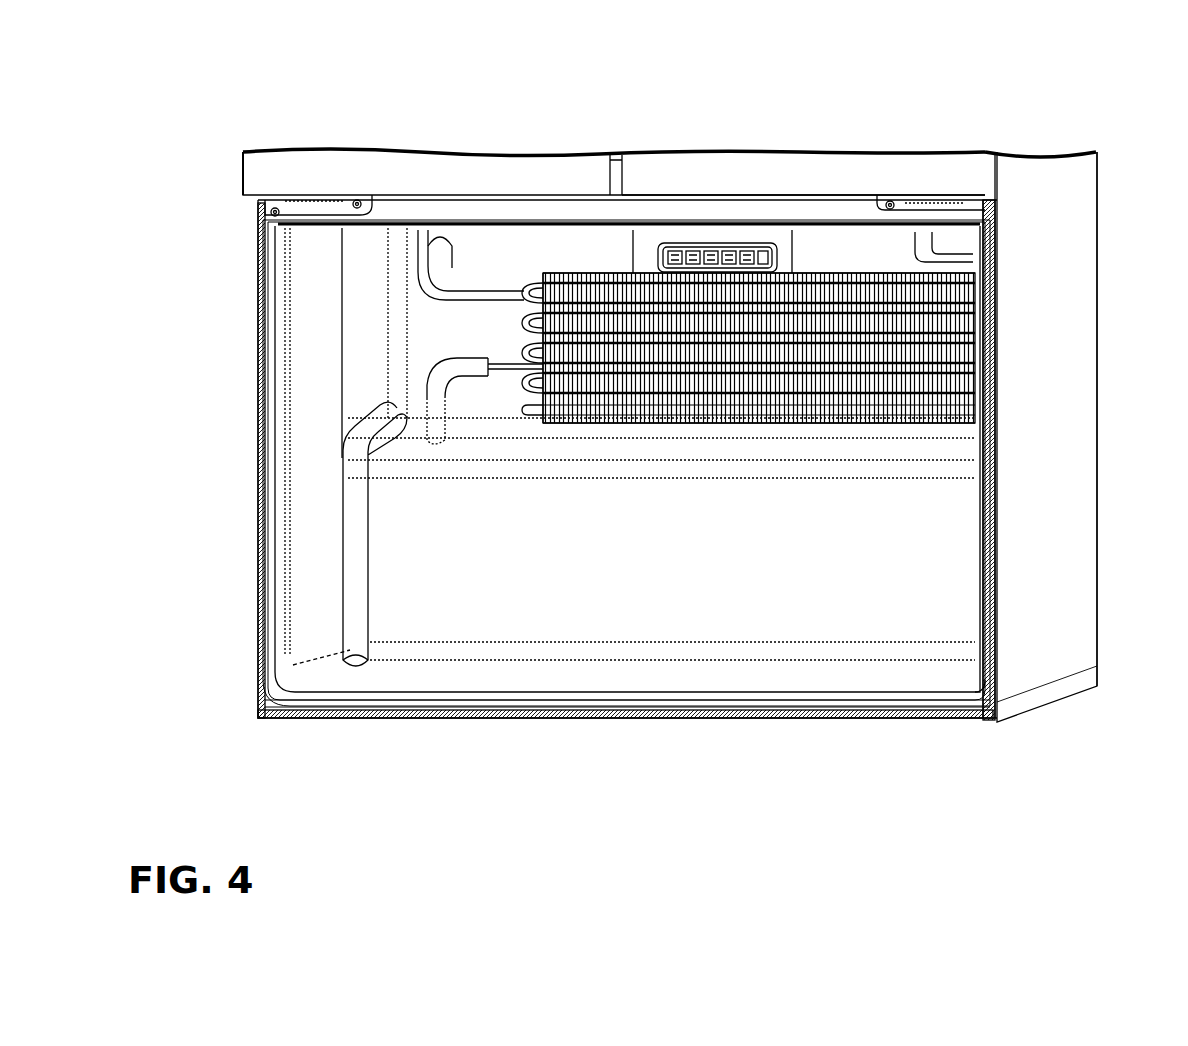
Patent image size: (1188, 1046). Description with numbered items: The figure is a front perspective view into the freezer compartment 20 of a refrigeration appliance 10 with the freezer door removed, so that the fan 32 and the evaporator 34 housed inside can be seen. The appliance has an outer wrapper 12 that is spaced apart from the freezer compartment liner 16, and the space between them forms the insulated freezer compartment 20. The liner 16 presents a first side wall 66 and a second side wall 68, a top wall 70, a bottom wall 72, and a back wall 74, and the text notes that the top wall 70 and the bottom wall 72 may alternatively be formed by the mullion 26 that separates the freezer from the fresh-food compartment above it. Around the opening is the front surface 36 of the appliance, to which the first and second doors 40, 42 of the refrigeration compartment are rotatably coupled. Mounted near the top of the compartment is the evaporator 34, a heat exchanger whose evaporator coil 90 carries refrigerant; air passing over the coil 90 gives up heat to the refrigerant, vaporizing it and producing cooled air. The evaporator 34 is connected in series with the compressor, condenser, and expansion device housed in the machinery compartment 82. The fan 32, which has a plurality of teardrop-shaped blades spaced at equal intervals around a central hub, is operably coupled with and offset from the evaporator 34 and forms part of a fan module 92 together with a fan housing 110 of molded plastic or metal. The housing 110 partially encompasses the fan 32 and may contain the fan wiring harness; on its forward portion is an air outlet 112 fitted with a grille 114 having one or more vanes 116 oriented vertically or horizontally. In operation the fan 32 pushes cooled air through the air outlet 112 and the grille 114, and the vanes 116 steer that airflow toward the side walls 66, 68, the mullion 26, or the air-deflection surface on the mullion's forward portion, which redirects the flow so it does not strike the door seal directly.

The refrigeration appliance 10 is at (238, 162).
The wrapper 12 is at (1050, 287).
The freezer compartment liner 16 is at (325, 497).
The freezer compartment 20 is at (790, 533).
The mullion 26 is at (425, 212).
The fan 32 is at (733, 258).
The evaporator 34 is at (978, 358).
The front surface 36 is at (278, 302).
The first door 40 is at (352, 172).
The second door 42 is at (900, 174).
The first side wall 66 is at (308, 612).
The second side wall 68 is at (970, 604).
The top wall 70 is at (328, 228).
The bottom wall 72 is at (420, 680).
The back wall 74 is at (453, 336).
The machinery compartment 82 is at (780, 604).
The evaporator coil 90 is at (527, 286).
The fan module 92 is at (713, 240).
The fan housing 110 is at (718, 260).
The air outlet 112 is at (760, 262).
The grille 114 is at (682, 244).
The vanes 116 is at (738, 256).